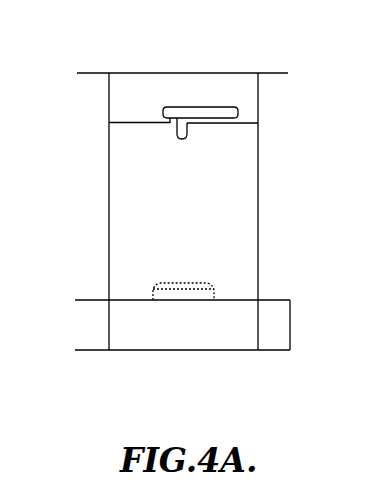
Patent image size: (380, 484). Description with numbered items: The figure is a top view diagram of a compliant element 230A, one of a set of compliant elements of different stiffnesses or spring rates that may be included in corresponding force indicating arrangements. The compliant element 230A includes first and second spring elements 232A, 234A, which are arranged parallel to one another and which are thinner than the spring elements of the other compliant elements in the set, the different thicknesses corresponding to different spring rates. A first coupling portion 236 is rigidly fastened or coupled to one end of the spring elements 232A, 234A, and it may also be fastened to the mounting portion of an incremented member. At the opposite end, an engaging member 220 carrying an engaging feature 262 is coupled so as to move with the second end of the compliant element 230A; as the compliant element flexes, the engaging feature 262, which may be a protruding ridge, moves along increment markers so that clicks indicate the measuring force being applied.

The engaging member 220 is at (191, 73).
The compliant element 230A is at (273, 152).
The first spring element 232A is at (108, 213).
The second spring element 234A is at (258, 208).
The first coupling portion 236 is at (190, 350).
The engaging feature 262 is at (184, 142).